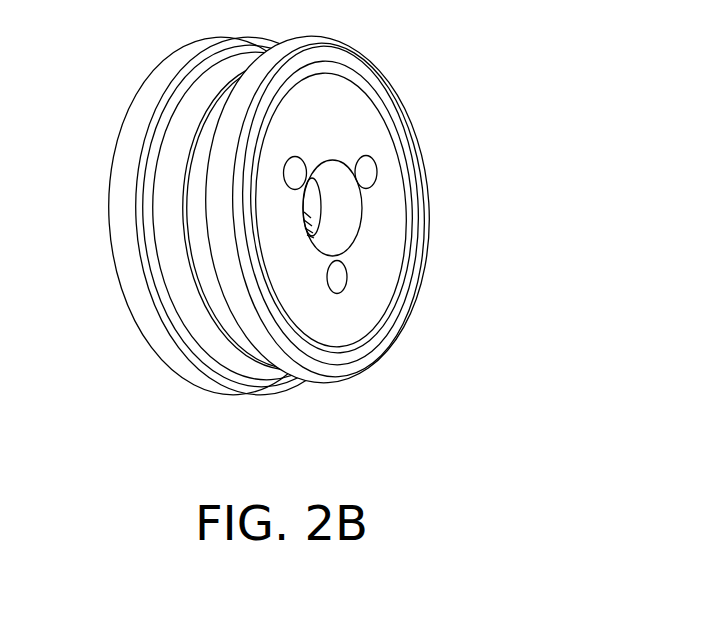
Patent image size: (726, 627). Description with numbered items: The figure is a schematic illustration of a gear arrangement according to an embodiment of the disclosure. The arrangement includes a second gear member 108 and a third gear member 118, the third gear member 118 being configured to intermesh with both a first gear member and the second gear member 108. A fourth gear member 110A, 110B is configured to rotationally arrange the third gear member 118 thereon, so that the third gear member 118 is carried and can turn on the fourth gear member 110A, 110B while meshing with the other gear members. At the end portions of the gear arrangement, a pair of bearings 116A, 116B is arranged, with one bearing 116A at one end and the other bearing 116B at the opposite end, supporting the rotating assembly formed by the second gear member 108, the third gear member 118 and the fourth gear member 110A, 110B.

The second gear member 108 is at (238, 337).
The fourth gear member 110A is at (357, 318).
The fourth gear member 110B is at (217, 342).
The bearing 116A is at (411, 312).
The bearing 116B is at (142, 335).
The third gear member 118 is at (311, 202).